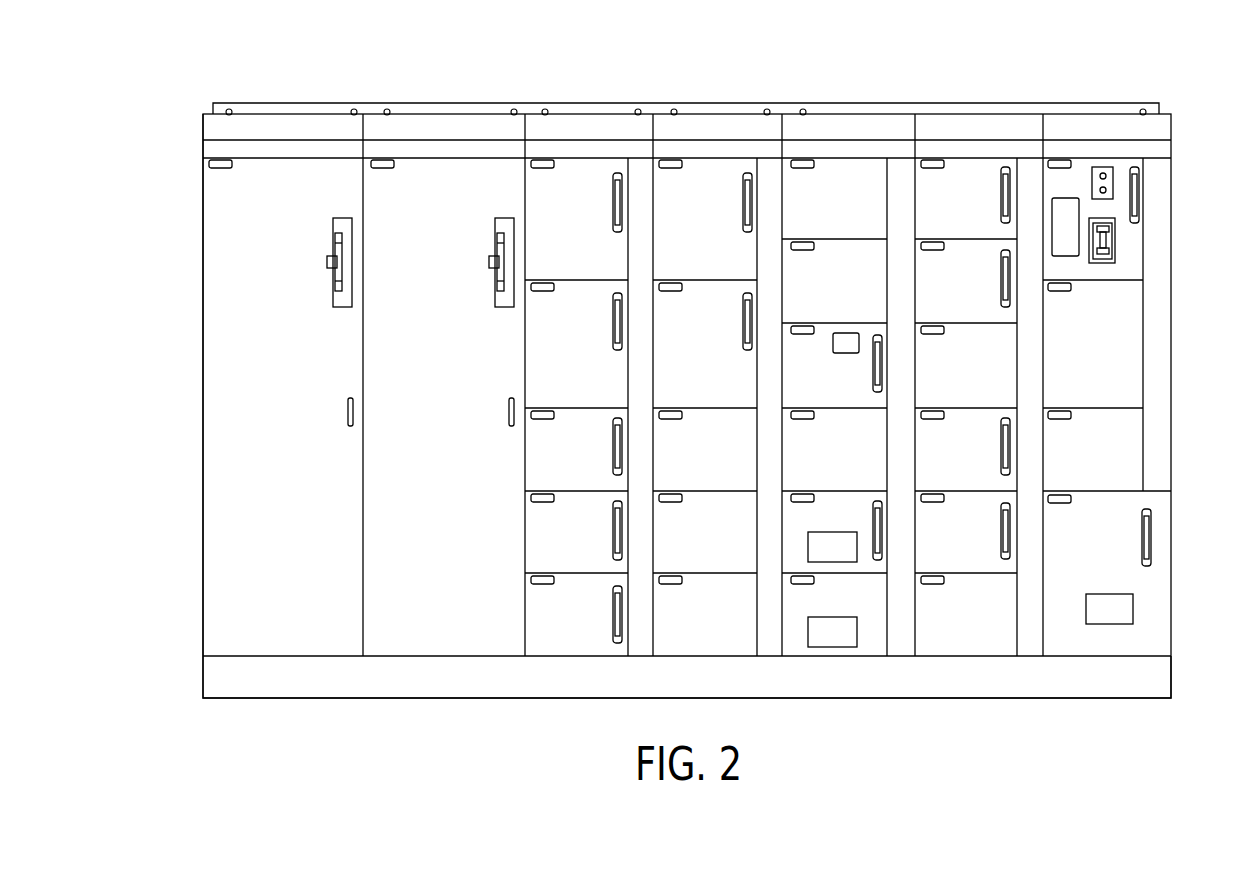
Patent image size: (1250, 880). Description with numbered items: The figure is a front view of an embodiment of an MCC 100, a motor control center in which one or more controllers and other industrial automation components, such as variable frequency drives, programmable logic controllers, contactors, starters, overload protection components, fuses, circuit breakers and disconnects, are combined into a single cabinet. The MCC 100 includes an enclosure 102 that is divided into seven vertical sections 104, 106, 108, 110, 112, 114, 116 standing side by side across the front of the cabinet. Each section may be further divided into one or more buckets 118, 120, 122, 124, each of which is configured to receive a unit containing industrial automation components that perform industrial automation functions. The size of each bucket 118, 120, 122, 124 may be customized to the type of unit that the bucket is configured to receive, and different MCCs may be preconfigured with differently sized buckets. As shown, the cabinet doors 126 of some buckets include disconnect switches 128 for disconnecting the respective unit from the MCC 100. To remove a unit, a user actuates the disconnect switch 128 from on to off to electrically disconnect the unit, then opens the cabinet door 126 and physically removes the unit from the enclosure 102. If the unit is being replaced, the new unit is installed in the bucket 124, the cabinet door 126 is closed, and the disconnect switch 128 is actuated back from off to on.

The MCC 100 is at (217, 127).
The enclosure 102 is at (203, 405).
The vertical section 104 is at (297, 103).
The vertical section 106 is at (450, 103).
The vertical section 108 is at (587, 103).
The vertical section 110 is at (722, 103).
The vertical section 112 is at (848, 103).
The vertical section 114 is at (970, 103).
The vertical section 116 is at (1146, 332).
The bucket 118 is at (1130, 249).
The bucket 120 is at (1103, 353).
The bucket 122 is at (1115, 447).
The bucket 124 is at (1149, 544).
The cabinet door 126 is at (1123, 612).
The disconnect switch 128 is at (1153, 536).